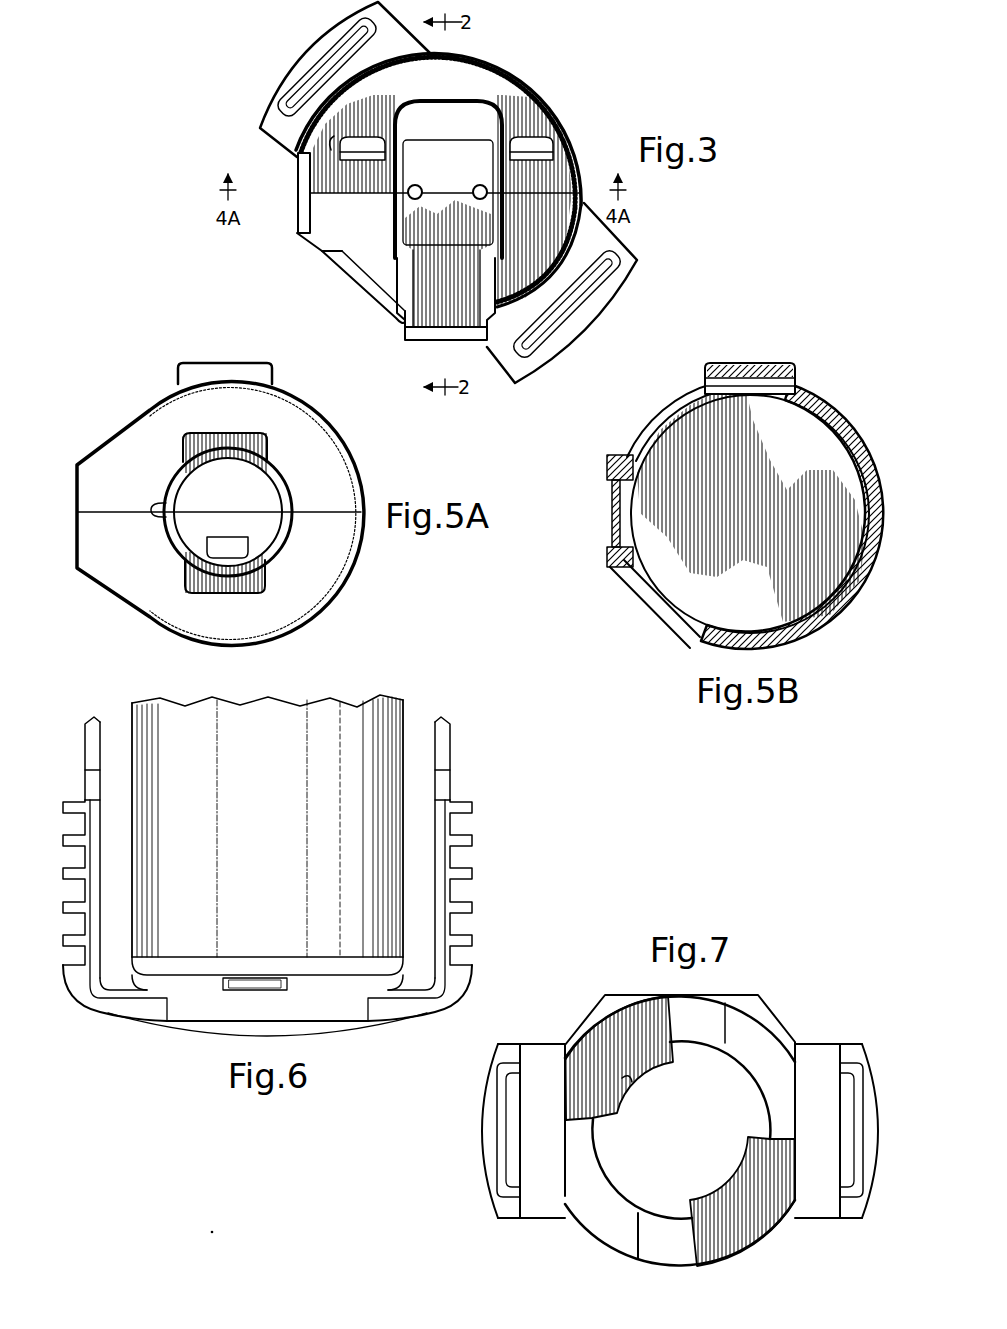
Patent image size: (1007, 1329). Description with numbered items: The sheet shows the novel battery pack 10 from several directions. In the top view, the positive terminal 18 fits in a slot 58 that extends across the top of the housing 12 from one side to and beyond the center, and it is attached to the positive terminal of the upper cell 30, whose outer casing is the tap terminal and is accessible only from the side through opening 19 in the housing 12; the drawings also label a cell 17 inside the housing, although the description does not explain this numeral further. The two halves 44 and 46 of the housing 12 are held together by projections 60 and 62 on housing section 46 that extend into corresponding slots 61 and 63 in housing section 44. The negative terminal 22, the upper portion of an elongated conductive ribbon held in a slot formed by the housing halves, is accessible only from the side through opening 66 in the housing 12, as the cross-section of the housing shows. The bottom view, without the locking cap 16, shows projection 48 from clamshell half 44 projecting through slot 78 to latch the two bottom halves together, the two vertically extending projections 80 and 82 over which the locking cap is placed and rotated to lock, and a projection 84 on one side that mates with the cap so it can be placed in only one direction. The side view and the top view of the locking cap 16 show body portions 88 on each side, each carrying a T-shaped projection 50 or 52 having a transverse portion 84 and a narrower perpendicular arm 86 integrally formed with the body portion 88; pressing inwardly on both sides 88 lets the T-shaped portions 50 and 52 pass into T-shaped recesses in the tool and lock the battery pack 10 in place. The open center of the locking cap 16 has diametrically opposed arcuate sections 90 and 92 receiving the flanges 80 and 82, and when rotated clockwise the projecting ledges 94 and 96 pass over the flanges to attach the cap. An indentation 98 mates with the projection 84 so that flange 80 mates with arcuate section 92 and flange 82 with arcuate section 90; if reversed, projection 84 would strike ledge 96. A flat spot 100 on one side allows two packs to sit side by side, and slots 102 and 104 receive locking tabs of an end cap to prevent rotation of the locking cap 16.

In FIG. 3, the battery pack 10 is at (505, 60).
In FIG. 5A, the housing 12 is at (111, 421).
In FIG. 3, the locking cap 16 is at (556, 378).
In FIG. 6, the locking cap 16 is at (497, 824).
In FIG. 7, the locking cap 16 is at (812, 1009).
In FIG. 3, the battery cell 17 is at (433, 330).
In FIG. 5B, the battery cell 17 is at (762, 392).
In FIG. 3, the positive terminal 18 is at (458, 320).
In FIG. 5B, the positive terminal 18 is at (765, 372).
In FIG. 3, the opening 19 is at (333, 268).
In FIG. 3, the negative terminal 22 is at (303, 218).
In FIG. 5B, the negative terminal 22 is at (611, 502).
In FIG. 3, the upper cell 30 is at (368, 292).
In FIG. 5B, the upper cell 30 is at (668, 412).
In FIG. 3, the housing half 44 is at (525, 79).
In FIG. 5A, the housing half 44 is at (330, 461).
In FIG. 5B, the housing half 44 is at (822, 404).
In FIG. 3, the housing half 46 is at (402, 322).
In FIG. 5A, the housing half 46 is at (318, 587).
In FIG. 5B, the housing half 46 is at (690, 642).
In FIG. 5A, the projection 48 is at (215, 551).
In FIG. 3, the T-shaped projection 50 is at (606, 286).
In FIG. 6, the T-shaped projection 50 is at (427, 762).
In FIG. 7, the T-shaped projection 50 is at (836, 1210).
In FIG. 3, the T-shaped projection 52 is at (318, 70).
In FIG. 6, the T-shaped projection 52 is at (106, 756).
In FIG. 7, the T-shaped projection 52 is at (540, 1206).
In FIG. 3, the slot 58 is at (477, 112).
In FIG. 3, the projection 60 is at (548, 146).
In FIG. 3, the slot 61 is at (512, 140).
In FIG. 3, the projection 62 is at (356, 146).
In FIG. 3, the slot 63 is at (332, 150).
In FIG. 5B, the opening 66 is at (610, 456).
In FIG. 5A, the slot 78 is at (236, 536).
In FIG. 5A, the projection 80 is at (240, 600).
In FIG. 5A, the projection 82 is at (238, 431).
In FIG. 5A, the projection 84 is at (151, 506).
In FIG. 6, the projection 84 is at (92, 736).
In FIG. 7, the projection 84 is at (505, 1153).
In FIG. 6, the arm 86 is at (92, 789).
In FIG. 6, the body portion 88 is at (105, 893).
In FIG. 7, the body portion 88 is at (483, 1087).
In FIG. 7, the arcuate section 90 is at (610, 1177).
In FIG. 7, the arcuate section 92 is at (748, 1076).
In FIG. 7, the projecting ledge 94 is at (620, 1116).
In FIG. 7, the projecting ledge 96 is at (722, 1197).
In FIG. 7, the indentation 98 is at (631, 1084).
In FIG. 7, the flat spot 100 is at (745, 996).
In FIG. 7, the slot 102 is at (708, 1026).
In FIG. 7, the slot 104 is at (668, 1247).